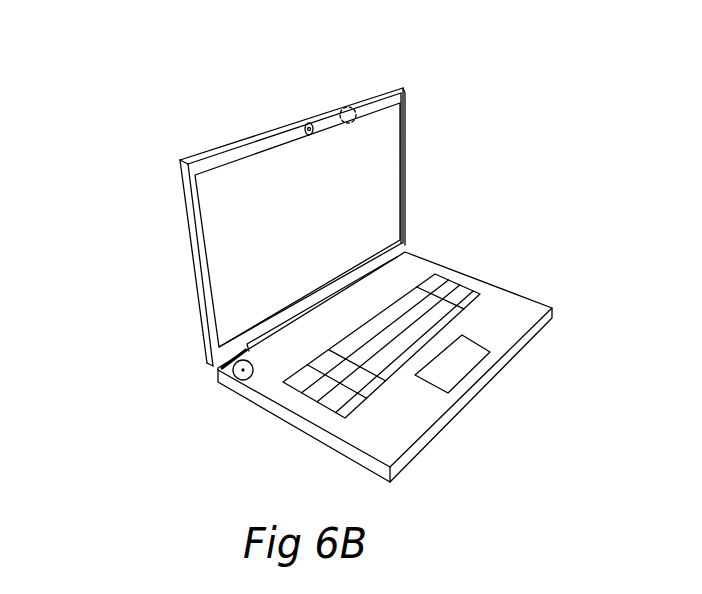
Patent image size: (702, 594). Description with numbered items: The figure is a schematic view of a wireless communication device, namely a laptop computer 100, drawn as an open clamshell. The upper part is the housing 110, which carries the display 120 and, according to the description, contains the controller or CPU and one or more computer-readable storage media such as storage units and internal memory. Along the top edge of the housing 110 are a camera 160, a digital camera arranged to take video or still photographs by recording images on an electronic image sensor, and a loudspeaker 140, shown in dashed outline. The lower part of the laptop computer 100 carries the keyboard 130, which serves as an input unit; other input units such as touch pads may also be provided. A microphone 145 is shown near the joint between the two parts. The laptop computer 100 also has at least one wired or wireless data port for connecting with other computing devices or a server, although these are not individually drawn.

The laptop computer 100 is at (236, 132).
The housing 110 is at (180, 162).
The display 120 is at (212, 238).
The keyboard 130 is at (302, 389).
The loudspeaker 140 is at (356, 108).
The microphone 145 is at (221, 369).
The camera 160 is at (307, 125).